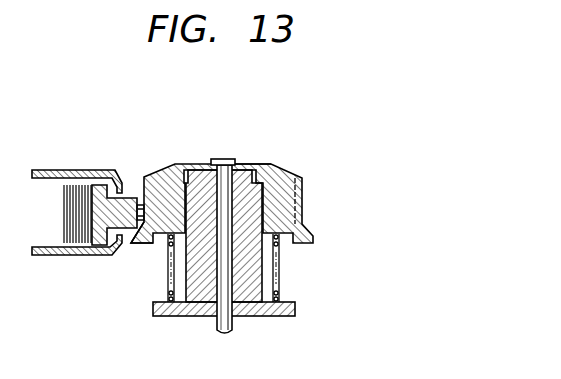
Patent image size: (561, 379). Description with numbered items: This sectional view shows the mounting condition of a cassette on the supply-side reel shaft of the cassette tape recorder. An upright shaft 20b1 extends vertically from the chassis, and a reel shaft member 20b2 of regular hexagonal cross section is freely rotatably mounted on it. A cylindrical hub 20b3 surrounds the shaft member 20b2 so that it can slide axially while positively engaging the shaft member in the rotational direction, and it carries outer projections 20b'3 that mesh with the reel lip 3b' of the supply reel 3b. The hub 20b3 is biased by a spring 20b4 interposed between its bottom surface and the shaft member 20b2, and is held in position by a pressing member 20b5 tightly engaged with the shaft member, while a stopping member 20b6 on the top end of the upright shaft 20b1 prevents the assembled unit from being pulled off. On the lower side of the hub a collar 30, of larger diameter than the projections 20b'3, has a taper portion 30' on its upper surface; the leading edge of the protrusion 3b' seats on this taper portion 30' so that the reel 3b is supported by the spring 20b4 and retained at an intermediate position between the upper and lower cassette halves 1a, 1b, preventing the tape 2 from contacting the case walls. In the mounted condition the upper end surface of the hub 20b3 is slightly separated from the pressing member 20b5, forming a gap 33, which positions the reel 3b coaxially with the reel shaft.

The upper cassette half 1a is at (50, 170).
The lower cassette half 1b is at (45, 256).
The tape 2 is at (64, 212).
The supply reel 3b is at (95, 245).
The reel lip 3b' is at (125, 173).
The collar 30 is at (133, 272).
The taper portion 30' is at (118, 258).
The gap 33 is at (182, 164).
The upright shaft 20b1 is at (218, 323).
The reel shaft member 20b2 is at (268, 283).
The cylindrical hub 20b3 is at (290, 165).
The outer projections 20b'3 is at (338, 201).
The spring 20b4 is at (278, 243).
The pressing member 20b5 is at (200, 163).
The stopping member 20b6 is at (250, 163).